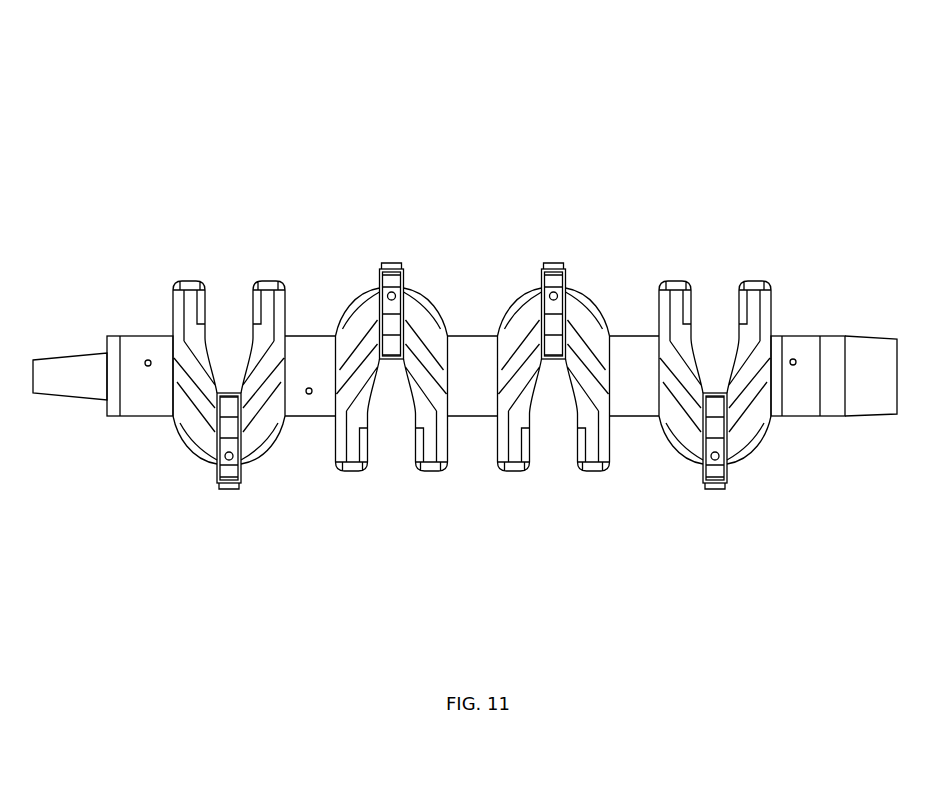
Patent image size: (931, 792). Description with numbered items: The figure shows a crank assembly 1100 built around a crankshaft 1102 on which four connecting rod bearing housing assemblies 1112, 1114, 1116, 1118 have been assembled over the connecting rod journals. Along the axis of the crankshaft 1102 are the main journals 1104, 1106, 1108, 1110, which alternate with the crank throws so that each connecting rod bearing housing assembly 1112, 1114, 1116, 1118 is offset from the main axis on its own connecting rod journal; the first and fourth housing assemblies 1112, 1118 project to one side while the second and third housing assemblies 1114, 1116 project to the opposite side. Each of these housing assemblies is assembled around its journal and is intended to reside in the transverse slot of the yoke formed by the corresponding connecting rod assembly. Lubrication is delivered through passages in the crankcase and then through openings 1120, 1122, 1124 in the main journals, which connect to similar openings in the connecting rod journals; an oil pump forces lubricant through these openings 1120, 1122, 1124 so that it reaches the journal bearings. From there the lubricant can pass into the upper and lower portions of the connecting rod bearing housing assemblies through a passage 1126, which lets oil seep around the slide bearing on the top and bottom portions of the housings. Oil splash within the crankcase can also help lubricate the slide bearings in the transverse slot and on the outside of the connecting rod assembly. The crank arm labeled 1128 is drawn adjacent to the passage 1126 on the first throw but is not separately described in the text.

The crank assembly 1100 is at (848, 53).
The crankshaft 1102 is at (135, 336).
The main journal 1104 is at (303, 336).
The main journal 1106 is at (464, 336).
The main journal 1108 is at (618, 336).
The main journal 1110 is at (800, 336).
The connecting rod bearing housing assembly 1112 is at (229, 489).
The connecting rod bearing housing assembly 1114 is at (389, 270).
The connecting rod bearing housing assembly 1116 is at (553, 270).
The connecting rod bearing housing assembly 1118 is at (715, 489).
The opening 1120 is at (146, 367).
The opening 1122 is at (311, 395).
The opening 1124 is at (792, 366).
The passage 1126 is at (189, 282).
The crank arm 1128 is at (267, 282).